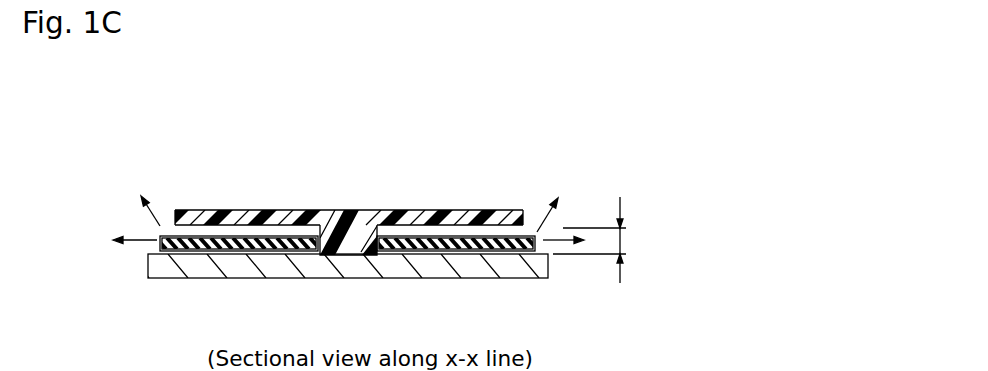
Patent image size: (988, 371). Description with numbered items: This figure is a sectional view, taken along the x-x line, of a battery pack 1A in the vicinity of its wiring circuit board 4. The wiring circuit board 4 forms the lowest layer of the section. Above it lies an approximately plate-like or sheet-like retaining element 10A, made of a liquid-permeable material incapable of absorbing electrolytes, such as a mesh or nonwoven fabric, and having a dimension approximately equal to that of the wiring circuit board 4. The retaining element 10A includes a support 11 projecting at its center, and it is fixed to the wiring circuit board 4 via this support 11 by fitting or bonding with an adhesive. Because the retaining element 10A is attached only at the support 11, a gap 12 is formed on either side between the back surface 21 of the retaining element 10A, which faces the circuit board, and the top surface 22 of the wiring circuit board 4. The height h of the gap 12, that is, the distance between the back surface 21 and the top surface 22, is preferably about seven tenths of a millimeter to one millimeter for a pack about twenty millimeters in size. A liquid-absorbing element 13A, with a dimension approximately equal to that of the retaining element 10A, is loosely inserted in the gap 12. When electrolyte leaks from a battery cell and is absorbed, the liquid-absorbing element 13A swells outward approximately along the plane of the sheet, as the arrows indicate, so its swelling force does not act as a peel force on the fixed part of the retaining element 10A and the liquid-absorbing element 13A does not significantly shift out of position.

The battery pack 1A is at (125, 113).
The wiring circuit board 4 is at (485, 286).
The retaining element 10A is at (425, 199).
The support 11 is at (360, 240).
The gap 12 is at (522, 224).
The liquid-absorbing element 13A is at (490, 238).
The back surface 21 is at (172, 227).
The top surface 22 is at (152, 254).
The height of the gap h is at (625, 238).